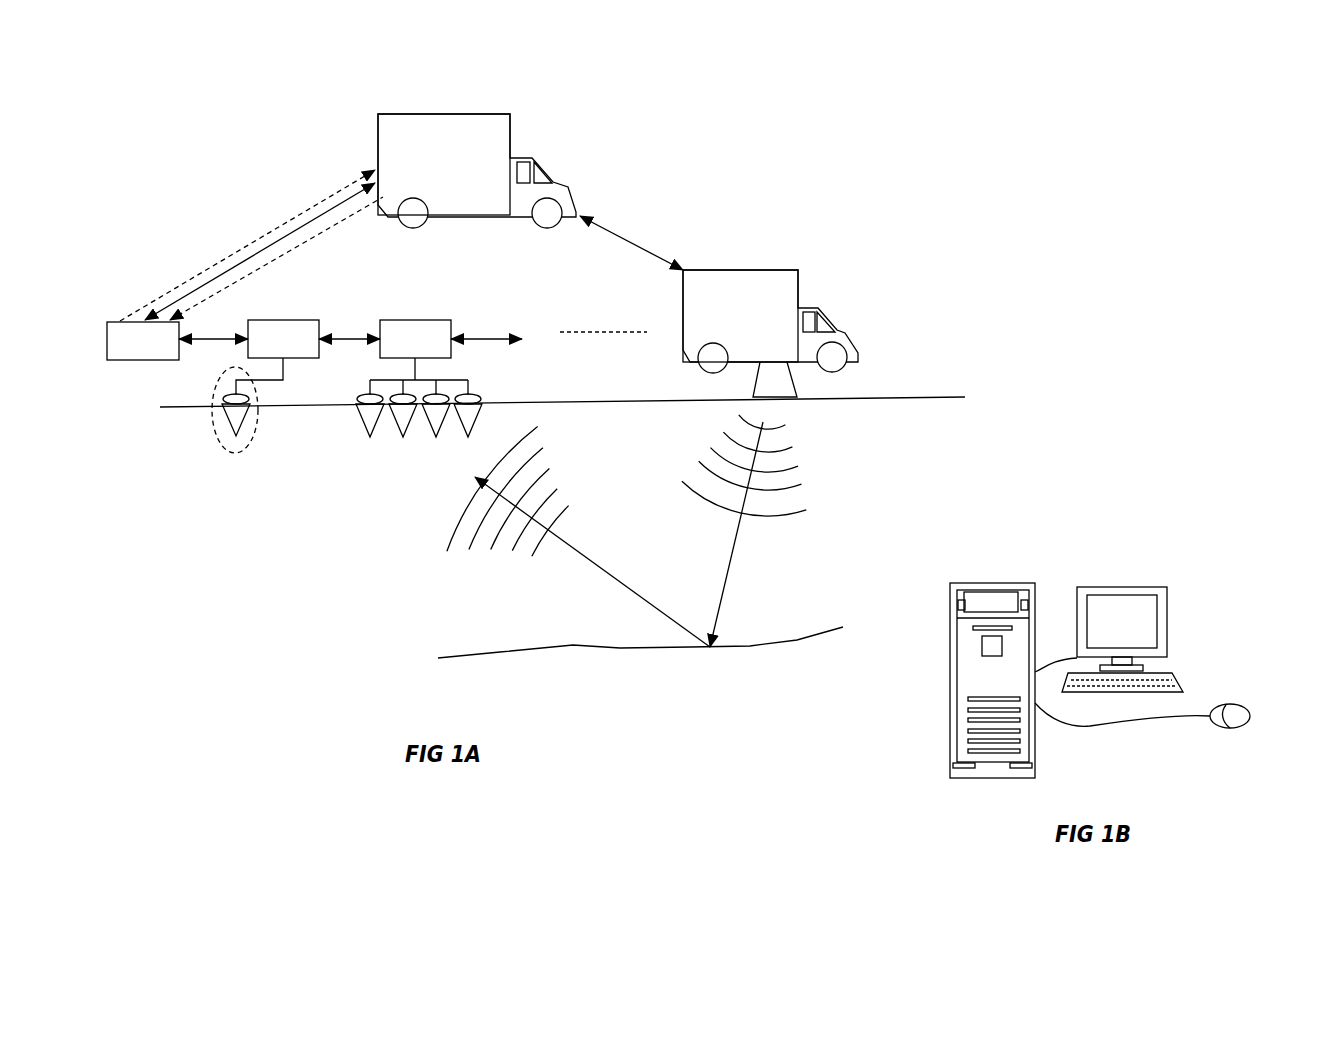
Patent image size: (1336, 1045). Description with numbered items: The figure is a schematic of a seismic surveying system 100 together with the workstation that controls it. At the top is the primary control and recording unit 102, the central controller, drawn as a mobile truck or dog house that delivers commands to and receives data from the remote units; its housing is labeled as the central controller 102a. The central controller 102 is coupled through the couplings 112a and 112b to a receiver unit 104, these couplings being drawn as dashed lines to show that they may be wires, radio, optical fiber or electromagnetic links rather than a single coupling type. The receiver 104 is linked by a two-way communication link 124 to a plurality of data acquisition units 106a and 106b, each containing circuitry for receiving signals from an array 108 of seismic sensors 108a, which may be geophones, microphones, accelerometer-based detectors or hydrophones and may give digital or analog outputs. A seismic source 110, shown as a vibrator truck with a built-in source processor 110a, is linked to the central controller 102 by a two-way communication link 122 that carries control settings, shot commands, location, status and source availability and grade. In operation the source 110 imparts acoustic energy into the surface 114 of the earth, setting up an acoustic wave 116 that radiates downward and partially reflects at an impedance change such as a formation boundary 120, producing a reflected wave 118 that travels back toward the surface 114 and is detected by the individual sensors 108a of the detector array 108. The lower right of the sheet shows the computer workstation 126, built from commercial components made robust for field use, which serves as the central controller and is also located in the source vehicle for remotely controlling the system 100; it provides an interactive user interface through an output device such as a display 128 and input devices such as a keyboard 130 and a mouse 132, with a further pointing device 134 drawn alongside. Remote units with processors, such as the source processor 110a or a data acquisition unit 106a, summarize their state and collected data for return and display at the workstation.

In FIG. 1A, the seismic surveying system 100 is at (779, 141).
In FIG. 1A, the primary control and recording unit 102 is at (557, 182).
In FIG. 1A, the central controller 102a is at (448, 126).
In FIG. 1A, the receiver unit 104 is at (107, 330).
In FIG. 1A, the data acquisition unit 106a is at (268, 320).
In FIG. 1A, the data acquisition unit 106b is at (437, 320).
In FIG. 1A, the array of seismic sensors 108 is at (411, 449).
In FIG. 1A, the seismic sensor 108a is at (221, 454).
In FIG. 1A, the seismic source 110 is at (843, 333).
In FIG. 1A, the source processor 110a is at (752, 290).
In FIG. 1A, the electrically conductive wire coupling 112a is at (340, 190).
In FIG. 1A, the electrically conductive wire coupling 112b is at (317, 232).
In FIG. 1A, the surface of the earth 114 is at (882, 397).
In FIG. 1A, the acoustic wave 116 is at (838, 492).
In FIG. 1A, the reflected wave 118 is at (520, 568).
In FIG. 1A, the formation boundary 120 is at (750, 648).
In FIG. 1A, the two-way communication link 122 is at (618, 237).
In FIG. 1A, the two-way communication link 124 is at (212, 341).
In FIG. 1B, the computer workstation 126 is at (1119, 751).
In FIG. 1B, the display 128 is at (955, 588).
In FIG. 1B, the keyboard 130 is at (1135, 587).
In FIG. 1B, the mouse 132 is at (1170, 672).
In FIG. 1B, the mouse 134 is at (1226, 705).